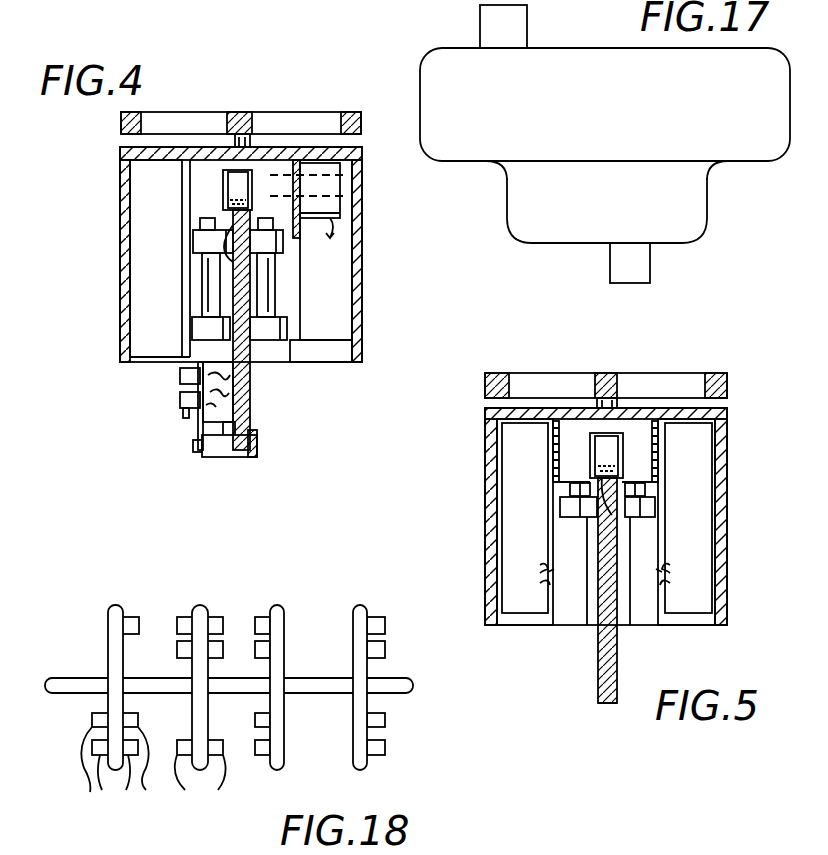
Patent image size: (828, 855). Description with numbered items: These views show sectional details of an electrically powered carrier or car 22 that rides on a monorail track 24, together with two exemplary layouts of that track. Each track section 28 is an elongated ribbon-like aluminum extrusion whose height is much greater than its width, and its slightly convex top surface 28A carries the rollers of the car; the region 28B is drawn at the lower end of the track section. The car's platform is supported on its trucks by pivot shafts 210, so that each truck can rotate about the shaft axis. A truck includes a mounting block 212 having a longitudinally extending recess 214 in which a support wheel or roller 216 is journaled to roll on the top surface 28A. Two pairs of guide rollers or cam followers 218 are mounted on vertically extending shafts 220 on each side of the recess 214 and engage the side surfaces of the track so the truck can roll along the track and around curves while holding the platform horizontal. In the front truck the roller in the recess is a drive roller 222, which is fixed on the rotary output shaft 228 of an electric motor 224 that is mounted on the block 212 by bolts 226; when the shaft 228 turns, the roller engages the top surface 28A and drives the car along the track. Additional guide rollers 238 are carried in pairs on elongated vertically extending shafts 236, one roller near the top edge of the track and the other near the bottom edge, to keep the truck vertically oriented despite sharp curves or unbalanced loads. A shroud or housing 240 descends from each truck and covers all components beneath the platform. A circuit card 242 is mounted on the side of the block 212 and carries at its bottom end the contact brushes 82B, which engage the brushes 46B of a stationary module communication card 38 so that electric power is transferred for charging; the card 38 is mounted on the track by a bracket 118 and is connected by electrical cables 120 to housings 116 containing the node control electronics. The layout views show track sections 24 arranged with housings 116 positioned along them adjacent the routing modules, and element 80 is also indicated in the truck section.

In FIG. 4, the carrier or car 22 is at (371, 223).
In FIG. 17, the monorail track 24 is at (698, 178).
In FIG. 18, the monorail track 24 is at (108, 656).
In FIG. 4, the track section 28 is at (243, 411).
In FIG. 5, the track section 28 is at (612, 650).
In FIG. 4, the top surface of track section 28A is at (240, 262).
In FIG. 5, the top surface of track section 28A is at (633, 516).
In FIG. 4, the lower end of shaft 28B is at (256, 438).
In FIG. 5, the lower end of shaft 28B is at (606, 706).
In FIG. 4, the module communication card 38 is at (201, 428).
In FIG. 4, the brushes 46B is at (213, 373).
In FIG. 5, the spring 80 is at (693, 600).
In FIG. 4, the contact brushes 82B is at (192, 396).
In FIG. 17, the housing 116 is at (516, 14).
In FIG. 18, the housing 116 is at (178, 636).
In FIG. 4, the bracket 118 is at (229, 457).
In FIG. 4, the electrical cable 120 is at (242, 391).
In FIG. 4, the pivot shaft 210 is at (238, 140).
In FIG. 5, the pivot shaft 210 is at (604, 398).
In FIG. 4, the mounting block 212 is at (195, 164).
In FIG. 5, the mounting block 212 is at (645, 440).
In FIG. 4, the recess 214 is at (222, 192).
In FIG. 5, the recess 214 is at (592, 452).
In FIG. 5, the support wheel or roller 216 is at (612, 442).
In FIG. 5, the guide rollers or cam followers 218 is at (566, 508).
In FIG. 5, the vertically extending shafts 220 is at (575, 489).
In FIG. 4, the drive roller 222 is at (246, 185).
In FIG. 4, the electric motor 224 is at (330, 188).
In FIG. 4, the bolts 226 is at (306, 165).
In FIG. 4, the rotary output shaft 228 is at (322, 181).
In FIG. 4, the elongated vertically extending shafts 236 is at (208, 283).
In FIG. 4, the rollers 238 is at (200, 243).
In FIG. 4, the shroud or housing 240 is at (356, 333).
In FIG. 5, the shroud or housing 240 is at (492, 560).
In FIG. 4, the circuit card 242 is at (188, 365).